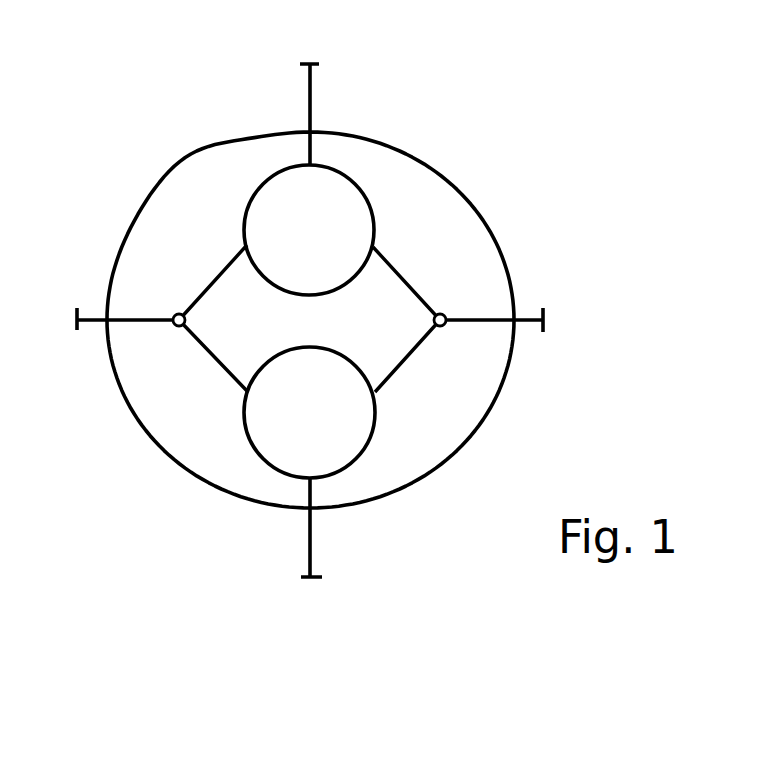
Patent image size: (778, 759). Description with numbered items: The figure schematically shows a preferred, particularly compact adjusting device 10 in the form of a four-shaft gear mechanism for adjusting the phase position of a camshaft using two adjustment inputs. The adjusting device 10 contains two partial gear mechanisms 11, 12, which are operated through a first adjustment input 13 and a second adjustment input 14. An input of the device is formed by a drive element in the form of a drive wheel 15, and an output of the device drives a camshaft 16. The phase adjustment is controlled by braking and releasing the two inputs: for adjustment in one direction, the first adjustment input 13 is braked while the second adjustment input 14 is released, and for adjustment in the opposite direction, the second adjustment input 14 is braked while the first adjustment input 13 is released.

The adjusting device 10 is at (199, 152).
The partial gear mechanism 11 is at (370, 197).
The partial gear mechanism 12 is at (367, 448).
The first adjustment input 13 is at (310, 108).
The second adjustment input 14 is at (311, 547).
The drive wheel 15 is at (93, 312).
The camshaft 16 is at (528, 314).